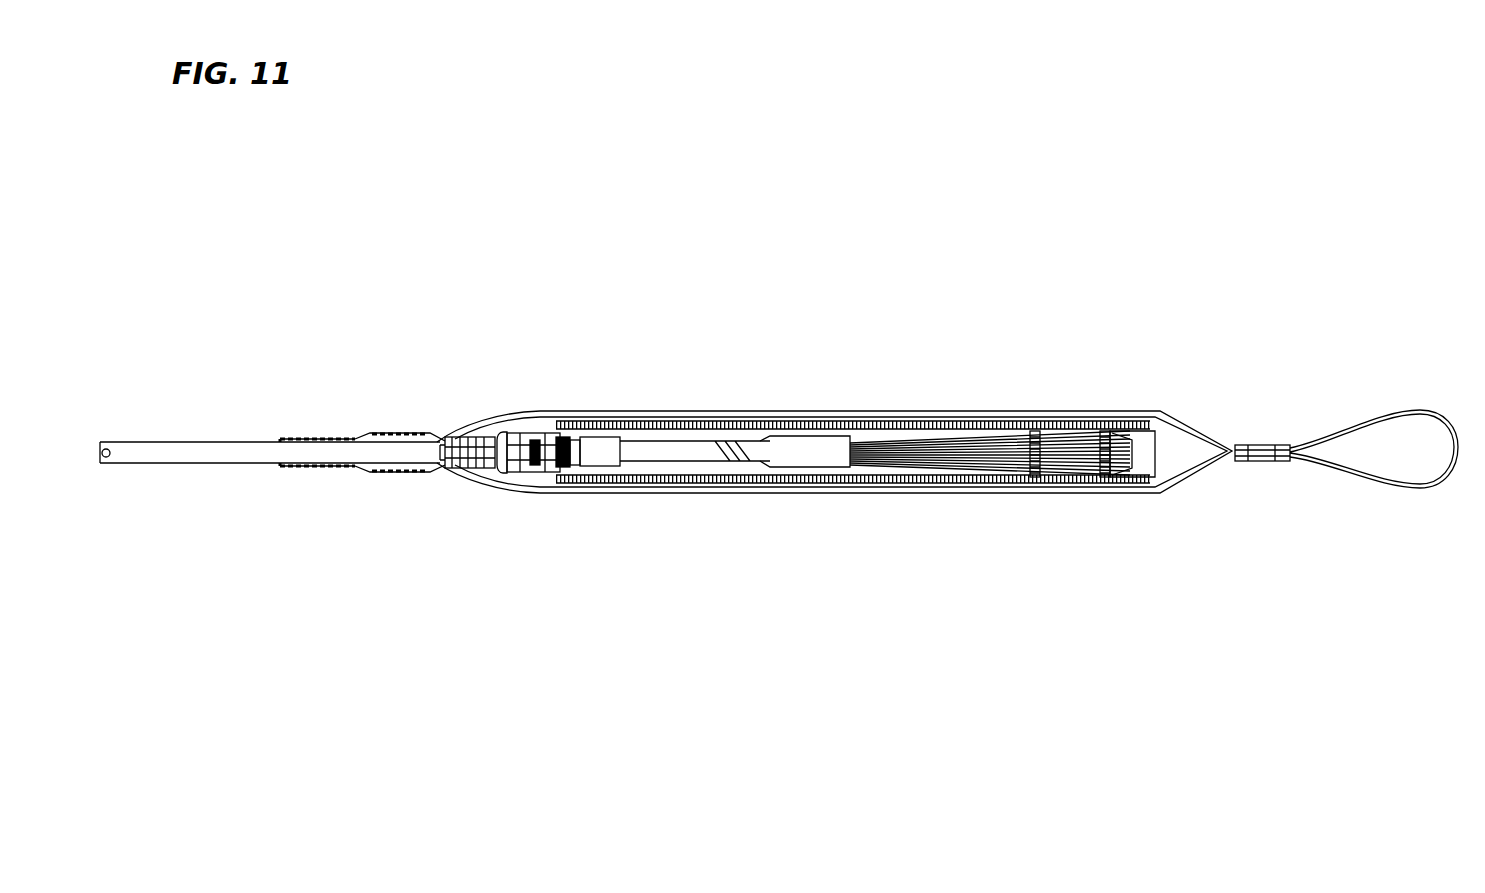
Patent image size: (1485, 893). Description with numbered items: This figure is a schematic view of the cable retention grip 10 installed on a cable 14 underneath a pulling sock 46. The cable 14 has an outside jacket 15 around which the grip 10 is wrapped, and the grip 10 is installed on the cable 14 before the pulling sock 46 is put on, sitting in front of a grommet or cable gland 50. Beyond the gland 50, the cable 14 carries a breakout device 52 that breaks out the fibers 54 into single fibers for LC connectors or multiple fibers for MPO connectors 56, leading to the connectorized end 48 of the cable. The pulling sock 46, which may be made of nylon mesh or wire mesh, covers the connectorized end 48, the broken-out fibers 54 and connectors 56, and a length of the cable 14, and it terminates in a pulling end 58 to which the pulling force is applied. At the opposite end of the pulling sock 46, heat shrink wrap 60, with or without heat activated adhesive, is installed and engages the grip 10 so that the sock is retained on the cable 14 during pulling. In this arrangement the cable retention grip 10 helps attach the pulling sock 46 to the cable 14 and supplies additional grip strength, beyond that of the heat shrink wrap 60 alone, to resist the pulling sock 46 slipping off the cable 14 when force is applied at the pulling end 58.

The cable retention grip 10 is at (470, 440).
The cable 14 is at (193, 448).
The outside jacket 15 is at (268, 442).
The pulling sock 46 is at (1092, 412).
The connectorized end 48 is at (1120, 446).
The cable gland 50 is at (508, 470).
The breakout device 52 is at (800, 448).
The optical fibers 54 is at (960, 442).
The MPO connectors 56 is at (1037, 465).
The pulling end 58 is at (1455, 463).
The heat shrink wrap 60 is at (380, 432).